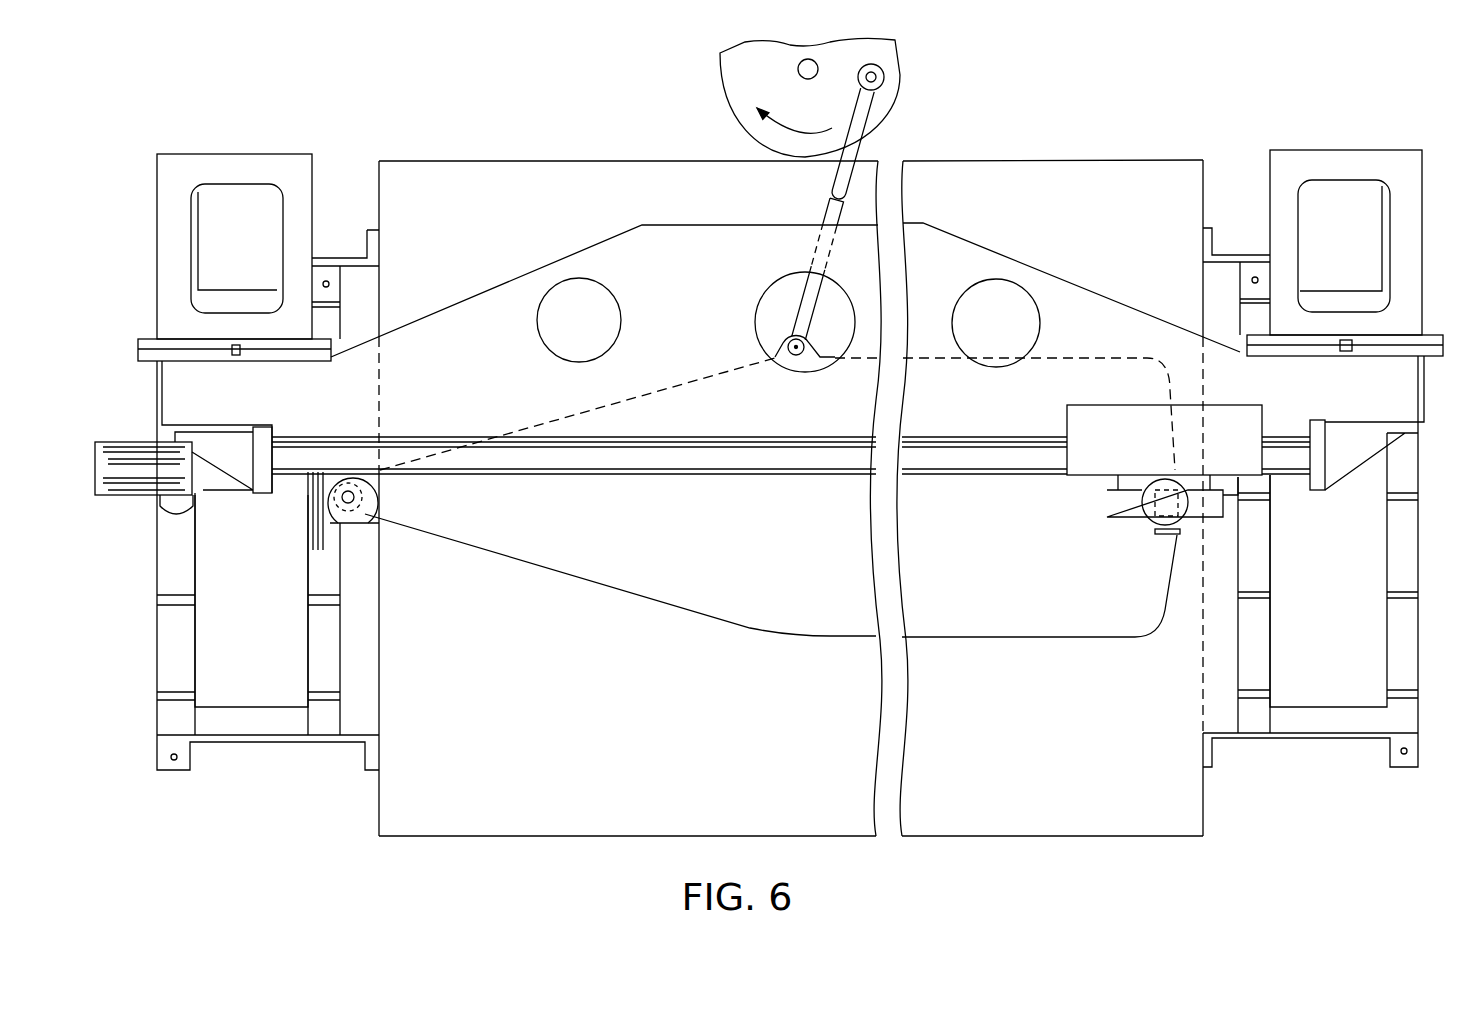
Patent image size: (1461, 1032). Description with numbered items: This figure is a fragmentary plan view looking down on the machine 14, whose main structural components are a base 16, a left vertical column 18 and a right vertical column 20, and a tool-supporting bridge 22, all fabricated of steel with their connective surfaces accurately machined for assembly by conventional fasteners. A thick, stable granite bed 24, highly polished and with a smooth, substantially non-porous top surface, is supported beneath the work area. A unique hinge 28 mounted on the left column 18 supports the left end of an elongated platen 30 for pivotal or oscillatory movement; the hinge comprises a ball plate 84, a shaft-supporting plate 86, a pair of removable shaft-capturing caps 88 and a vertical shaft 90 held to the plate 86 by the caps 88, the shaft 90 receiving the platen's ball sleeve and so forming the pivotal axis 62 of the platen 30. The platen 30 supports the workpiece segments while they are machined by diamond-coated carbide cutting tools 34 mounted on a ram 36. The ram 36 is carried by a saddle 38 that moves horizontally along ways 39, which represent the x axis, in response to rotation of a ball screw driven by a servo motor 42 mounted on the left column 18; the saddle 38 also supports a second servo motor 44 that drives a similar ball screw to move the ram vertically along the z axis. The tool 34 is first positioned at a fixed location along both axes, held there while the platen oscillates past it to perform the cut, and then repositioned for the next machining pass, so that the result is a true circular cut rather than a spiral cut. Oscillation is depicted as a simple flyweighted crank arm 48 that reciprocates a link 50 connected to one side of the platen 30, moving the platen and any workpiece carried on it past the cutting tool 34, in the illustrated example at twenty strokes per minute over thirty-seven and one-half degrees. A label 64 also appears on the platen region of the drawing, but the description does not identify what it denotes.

The machine 14 is at (365, 783).
The base 16 is at (1420, 625).
The left vertical column 18 is at (250, 707).
The right vertical column 20 is at (1388, 520).
The tool-supporting bridge 22 is at (642, 230).
The granite bed 24 is at (528, 826).
The hinge 28 is at (360, 592).
The platen 30 is at (750, 628).
The cutting tool 34 is at (1163, 535).
The ram 36 is at (1107, 508).
The saddle 38 is at (1087, 405).
The ways 39 is at (620, 473).
The servo motor 42 is at (150, 442).
The pulley 44 is at (1152, 488).
The flyweighted crank arm 48 is at (899, 88).
The link 50 is at (836, 180).
The pivotal axis 62 is at (375, 490).
The conveyor 64 is at (756, 523).
The ball plate 84 is at (310, 553).
The shaft-supporting plate 86 is at (330, 537).
The shaft-capturing caps 88 is at (375, 480).
The vertical shaft 90 is at (342, 500).